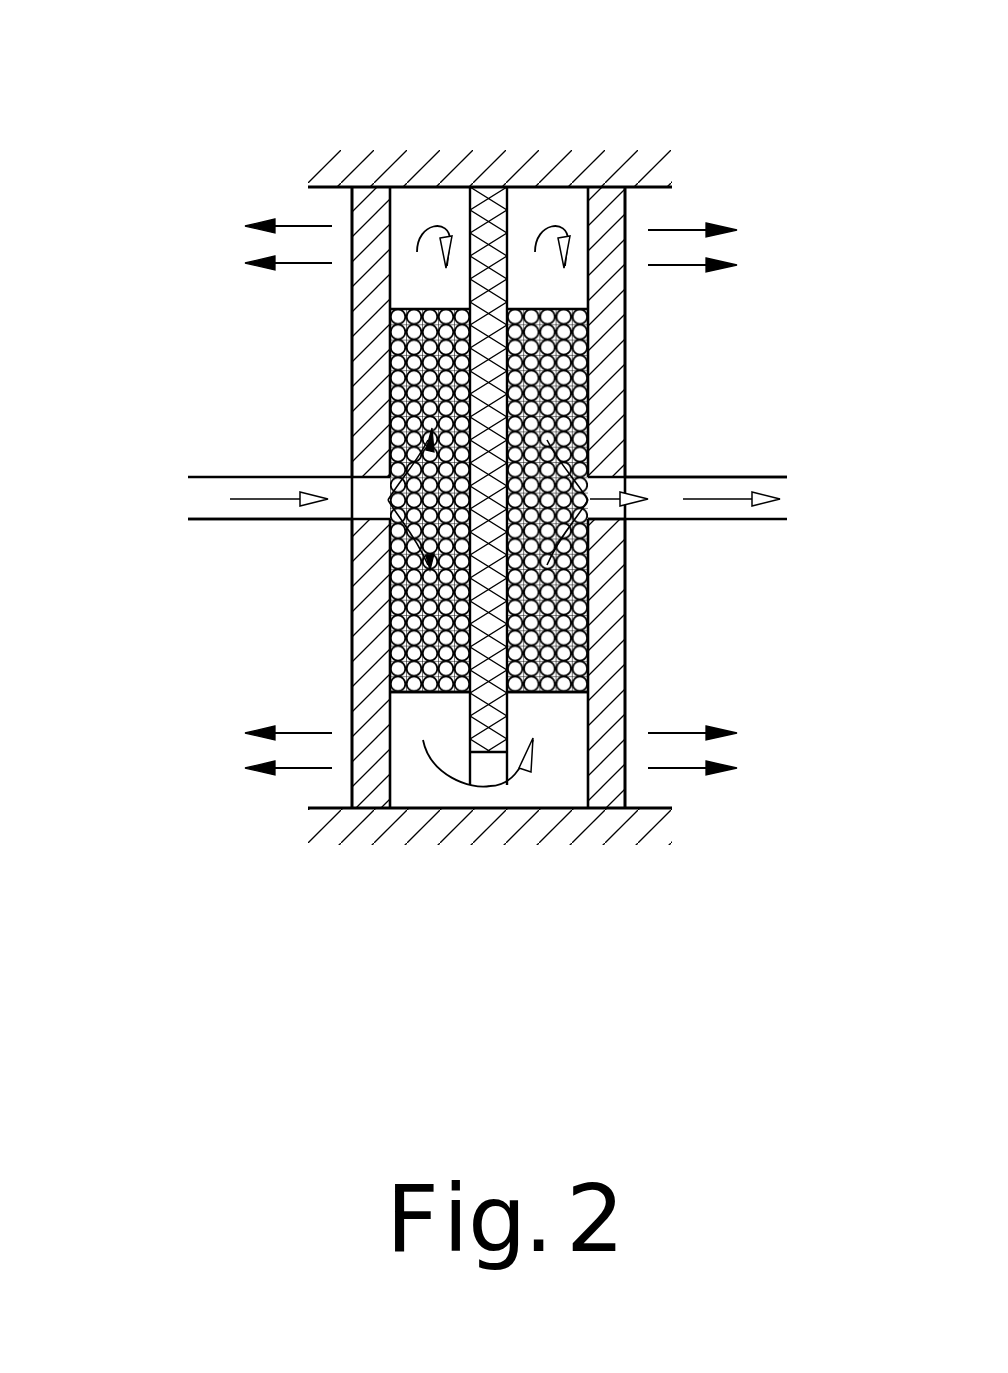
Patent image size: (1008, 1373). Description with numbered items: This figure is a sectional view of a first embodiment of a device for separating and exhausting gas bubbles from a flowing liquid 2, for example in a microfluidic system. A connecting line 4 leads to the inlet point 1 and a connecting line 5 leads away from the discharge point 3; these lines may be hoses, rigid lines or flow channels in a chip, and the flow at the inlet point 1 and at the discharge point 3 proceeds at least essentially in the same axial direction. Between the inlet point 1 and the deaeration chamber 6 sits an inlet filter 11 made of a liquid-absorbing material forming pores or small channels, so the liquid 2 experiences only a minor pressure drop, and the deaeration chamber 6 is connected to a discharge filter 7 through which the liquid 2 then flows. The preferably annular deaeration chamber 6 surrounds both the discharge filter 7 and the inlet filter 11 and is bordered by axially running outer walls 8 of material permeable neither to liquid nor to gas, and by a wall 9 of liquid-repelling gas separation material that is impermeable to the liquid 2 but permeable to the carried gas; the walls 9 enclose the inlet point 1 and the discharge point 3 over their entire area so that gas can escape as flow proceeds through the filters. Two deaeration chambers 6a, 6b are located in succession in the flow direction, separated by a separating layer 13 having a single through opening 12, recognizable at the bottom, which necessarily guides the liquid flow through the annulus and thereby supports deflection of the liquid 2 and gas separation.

The inlet point 1 is at (373, 517).
The liquid 2 is at (247, 498).
The discharge point 3 is at (623, 522).
The connecting line 4 is at (213, 521).
The connecting line 5 is at (758, 477).
The deaeration chamber 6 is at (438, 203).
The deaeration chamber 6a is at (413, 783).
The deaeration chamber 6b is at (553, 785).
The discharge filter 7 is at (565, 605).
The outer wall 8 is at (508, 186).
The wall 9 is at (379, 288).
The inlet filter 11 is at (380, 623).
The through opening 12 is at (477, 804).
The separating layer 13 is at (510, 678).